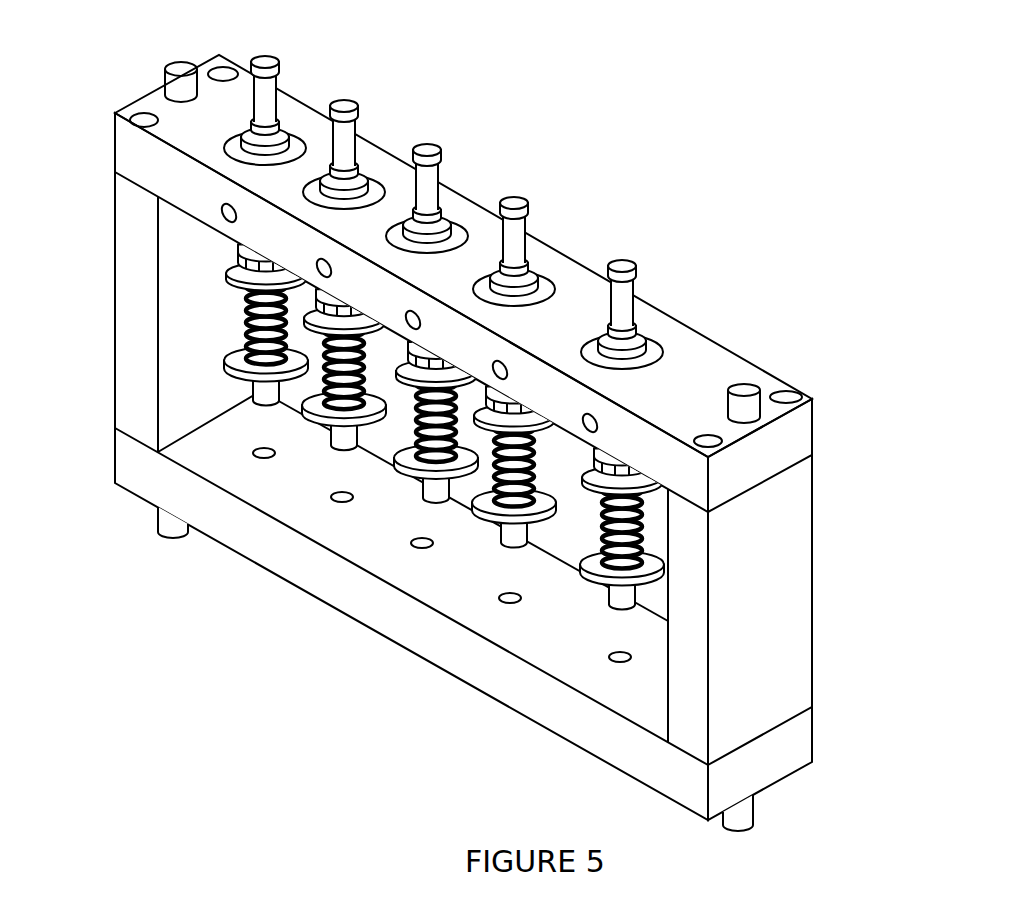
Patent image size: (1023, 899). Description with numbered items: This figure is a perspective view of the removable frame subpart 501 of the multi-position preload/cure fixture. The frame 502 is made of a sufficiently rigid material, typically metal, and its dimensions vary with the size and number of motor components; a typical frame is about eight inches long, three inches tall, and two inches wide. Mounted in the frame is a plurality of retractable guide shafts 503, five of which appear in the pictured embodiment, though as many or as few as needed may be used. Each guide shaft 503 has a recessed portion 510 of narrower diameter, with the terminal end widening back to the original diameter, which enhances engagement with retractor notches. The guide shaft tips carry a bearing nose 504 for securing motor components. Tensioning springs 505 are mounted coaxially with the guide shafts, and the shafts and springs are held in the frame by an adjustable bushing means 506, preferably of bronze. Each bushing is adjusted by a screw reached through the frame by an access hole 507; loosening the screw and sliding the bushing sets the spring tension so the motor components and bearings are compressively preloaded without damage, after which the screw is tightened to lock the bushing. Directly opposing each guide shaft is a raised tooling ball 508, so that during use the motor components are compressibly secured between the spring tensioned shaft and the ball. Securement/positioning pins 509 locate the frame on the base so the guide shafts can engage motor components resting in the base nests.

The removable frame subpart 501 is at (752, 203).
The frame 502 is at (813, 532).
The retractable guide shaft 503 is at (273, 68).
The bearing nose 504 is at (498, 540).
The tensioning spring 505 is at (644, 544).
The adjustable bushing means 506 is at (438, 228).
The access hole 507 is at (588, 430).
The raised tooling ball 508 is at (621, 664).
The securement/positioning pin 509 is at (166, 66).
The recessed portion 510 is at (346, 148).